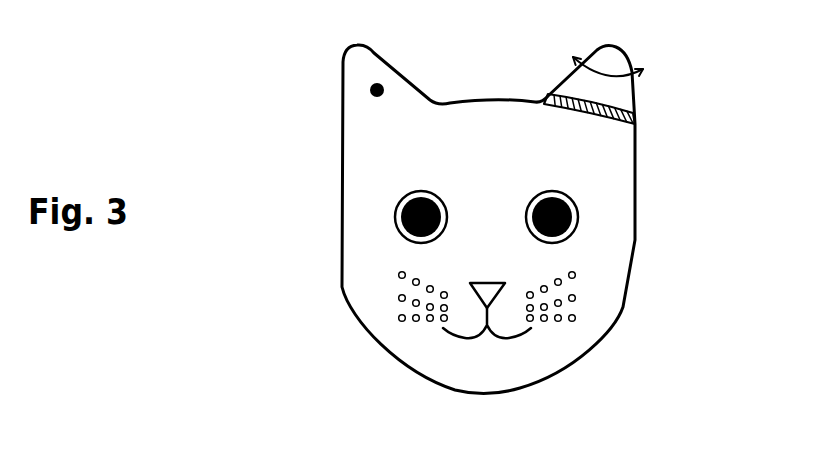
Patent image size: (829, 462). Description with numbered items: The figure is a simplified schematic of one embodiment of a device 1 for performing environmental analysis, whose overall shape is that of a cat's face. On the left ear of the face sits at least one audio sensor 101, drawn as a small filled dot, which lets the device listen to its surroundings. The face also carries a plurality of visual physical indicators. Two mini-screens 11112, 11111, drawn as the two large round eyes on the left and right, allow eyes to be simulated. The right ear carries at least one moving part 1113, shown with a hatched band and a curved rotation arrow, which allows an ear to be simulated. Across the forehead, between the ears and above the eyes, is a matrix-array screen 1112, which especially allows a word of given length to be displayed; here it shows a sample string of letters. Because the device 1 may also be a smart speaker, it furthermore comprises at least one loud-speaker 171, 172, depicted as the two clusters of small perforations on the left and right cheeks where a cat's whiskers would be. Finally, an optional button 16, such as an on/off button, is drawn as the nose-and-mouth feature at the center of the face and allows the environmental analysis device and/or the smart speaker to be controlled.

The device for performing environmental analysis 1 is at (617, 315).
The audio sensor 101 is at (370, 90).
The moving part 1113 is at (633, 102).
The matrix-array screen 1112 is at (581, 155).
The mini-screen 11111 is at (578, 212).
The mini-screen 11112 is at (395, 215).
The button 16 is at (503, 282).
The loud-speaker 171 is at (422, 327).
The loud-speaker 172 is at (565, 323).